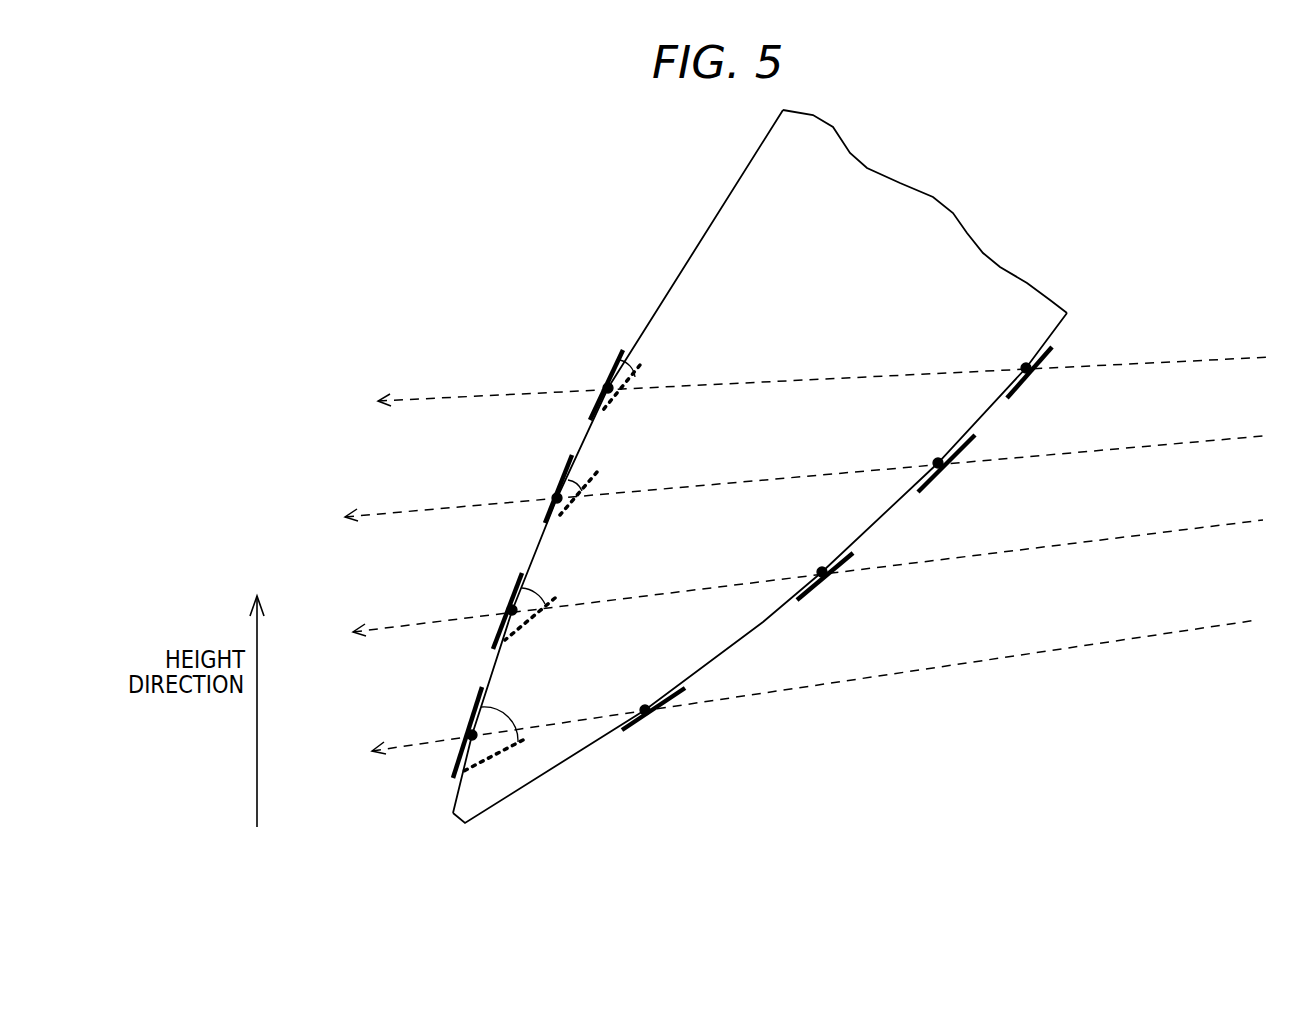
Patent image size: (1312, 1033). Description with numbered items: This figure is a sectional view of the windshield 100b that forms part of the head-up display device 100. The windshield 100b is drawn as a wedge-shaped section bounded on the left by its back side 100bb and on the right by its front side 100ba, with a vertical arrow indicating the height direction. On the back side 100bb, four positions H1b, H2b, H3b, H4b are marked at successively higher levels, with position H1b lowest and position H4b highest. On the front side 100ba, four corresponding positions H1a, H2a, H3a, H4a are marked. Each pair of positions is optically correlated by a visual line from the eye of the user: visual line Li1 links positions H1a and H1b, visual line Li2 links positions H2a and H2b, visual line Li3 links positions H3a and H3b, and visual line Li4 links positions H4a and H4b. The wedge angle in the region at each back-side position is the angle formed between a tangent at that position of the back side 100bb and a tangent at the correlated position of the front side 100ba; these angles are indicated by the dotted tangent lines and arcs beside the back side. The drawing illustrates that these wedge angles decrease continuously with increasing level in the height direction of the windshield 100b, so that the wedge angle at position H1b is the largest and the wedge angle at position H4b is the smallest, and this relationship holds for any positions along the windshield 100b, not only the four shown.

The display device 100 is at (760, 466).
The windshield 100b is at (760, 466).
The back side 100bb is at (681, 262).
The front side 100ba is at (764, 622).
The visual line Li1 is at (814, 674).
The visual line Li2 is at (808, 565).
The visual line Li3 is at (804, 465).
The visual line Li4 is at (825, 367).
The position H1a is at (653, 712).
The position H2a is at (838, 570).
The position H3a is at (953, 460).
The position H4a is at (1038, 366).
The position H1b is at (470, 733).
The position H2b is at (509, 610).
The position H3b is at (555, 496).
The position H4b is at (604, 387).